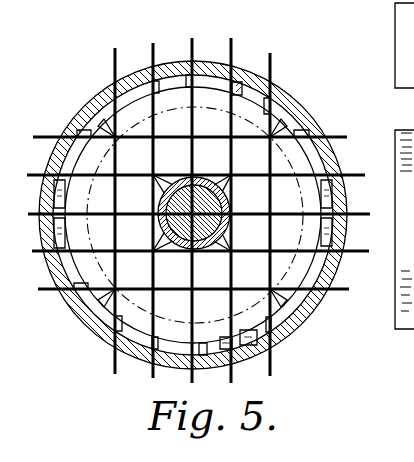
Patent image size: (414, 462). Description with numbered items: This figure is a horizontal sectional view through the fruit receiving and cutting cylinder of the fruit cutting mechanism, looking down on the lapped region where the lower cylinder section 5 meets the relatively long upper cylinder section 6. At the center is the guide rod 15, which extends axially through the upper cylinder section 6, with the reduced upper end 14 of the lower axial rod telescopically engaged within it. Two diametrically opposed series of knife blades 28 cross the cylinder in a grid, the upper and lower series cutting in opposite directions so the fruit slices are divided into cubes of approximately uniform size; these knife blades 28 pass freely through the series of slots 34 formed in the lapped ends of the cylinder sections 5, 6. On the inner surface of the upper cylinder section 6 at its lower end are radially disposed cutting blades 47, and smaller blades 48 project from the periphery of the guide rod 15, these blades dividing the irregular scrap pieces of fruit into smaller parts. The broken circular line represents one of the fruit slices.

The lower cylinder section 5 is at (319, 237).
The upper cylinder section 6 is at (336, 160).
The reduced upper end of rod 14 is at (207, 189).
The guide rod 15 is at (194, 250).
The knife blades 28 is at (192, 38).
The slots 34 is at (254, 90).
The radially disposed cutting blades 47 is at (100, 127).
The smaller blades 48 is at (230, 236).